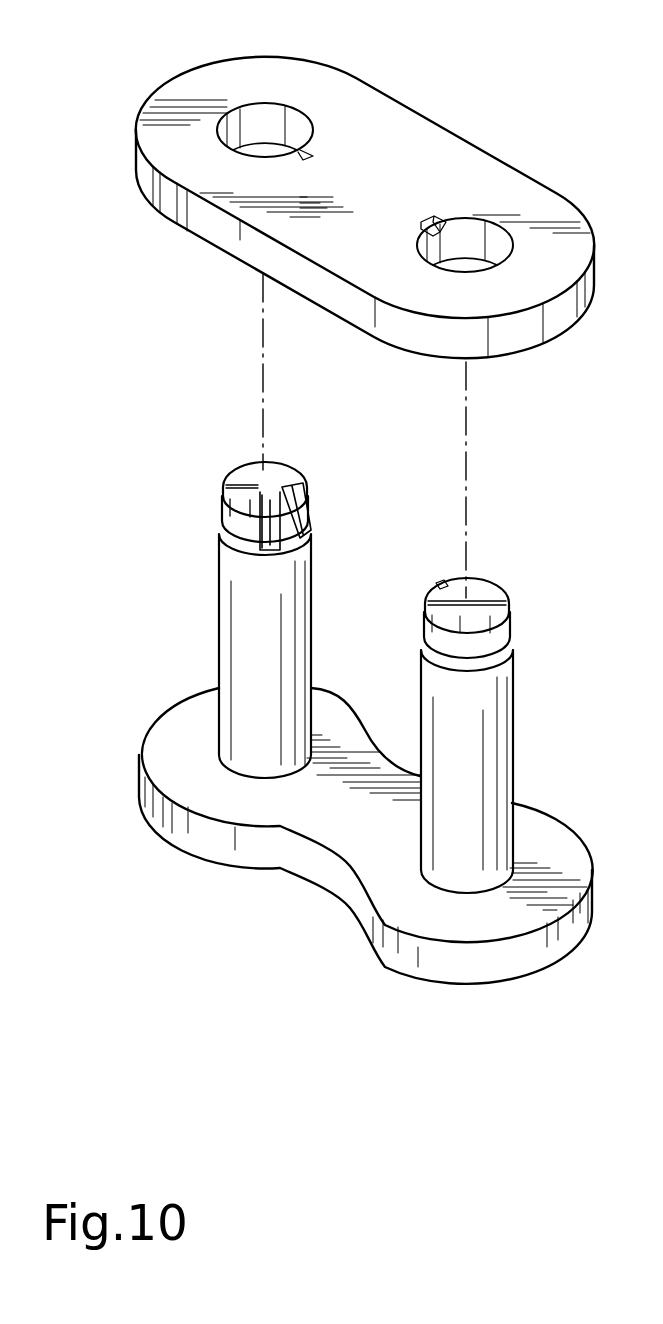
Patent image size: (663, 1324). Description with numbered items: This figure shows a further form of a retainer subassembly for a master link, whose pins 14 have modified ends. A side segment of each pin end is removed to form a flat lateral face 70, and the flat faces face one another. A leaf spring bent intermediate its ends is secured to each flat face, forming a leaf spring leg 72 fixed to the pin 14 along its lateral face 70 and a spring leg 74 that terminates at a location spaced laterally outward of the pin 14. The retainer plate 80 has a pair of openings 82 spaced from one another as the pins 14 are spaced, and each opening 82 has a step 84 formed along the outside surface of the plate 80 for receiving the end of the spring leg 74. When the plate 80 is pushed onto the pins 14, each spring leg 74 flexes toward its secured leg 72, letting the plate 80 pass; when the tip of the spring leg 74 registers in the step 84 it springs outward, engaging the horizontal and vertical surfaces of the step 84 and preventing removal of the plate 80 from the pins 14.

The pin 14 is at (235, 598).
The flat lateral face 70 is at (235, 497).
The leaf spring leg 72 is at (265, 527).
The spring leg 74 is at (300, 522).
The retainer plate 80 is at (177, 138).
The opening 82 is at (273, 117).
The step 84 is at (433, 218).